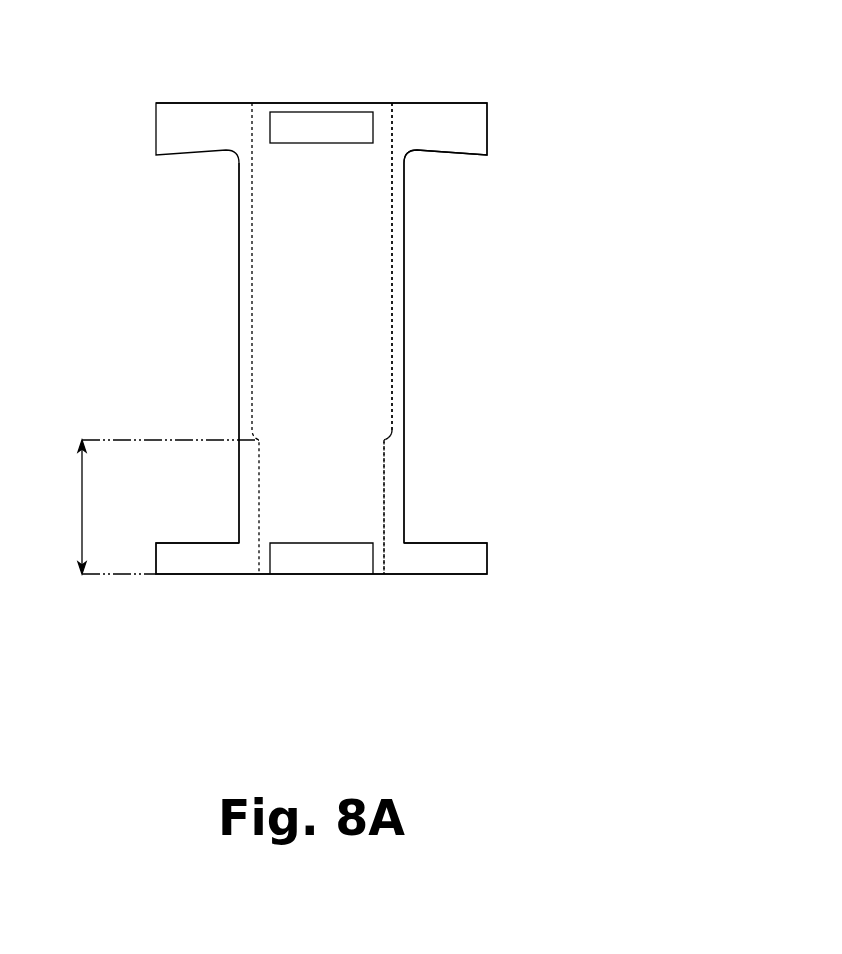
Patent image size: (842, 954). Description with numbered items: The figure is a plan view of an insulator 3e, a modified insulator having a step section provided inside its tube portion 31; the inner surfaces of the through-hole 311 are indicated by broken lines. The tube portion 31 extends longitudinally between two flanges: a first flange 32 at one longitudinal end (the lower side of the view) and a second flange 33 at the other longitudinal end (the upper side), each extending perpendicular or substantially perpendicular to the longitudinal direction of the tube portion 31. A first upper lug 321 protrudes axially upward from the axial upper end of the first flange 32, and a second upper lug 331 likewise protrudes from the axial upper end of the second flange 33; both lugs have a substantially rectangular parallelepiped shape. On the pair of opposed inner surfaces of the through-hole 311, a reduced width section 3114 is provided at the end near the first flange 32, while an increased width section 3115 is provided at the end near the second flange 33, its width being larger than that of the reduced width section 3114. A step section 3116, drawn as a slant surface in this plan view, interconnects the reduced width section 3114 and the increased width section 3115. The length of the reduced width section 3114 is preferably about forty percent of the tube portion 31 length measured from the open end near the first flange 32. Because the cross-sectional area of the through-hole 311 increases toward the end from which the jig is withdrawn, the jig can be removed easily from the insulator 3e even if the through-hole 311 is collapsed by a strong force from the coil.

The insulator 3e is at (128, 108).
The second flange 33 is at (228, 108).
The second upper lug 331 is at (330, 127).
The tube portion 31 is at (238, 215).
The through-hole 311 is at (272, 262).
The increased width section 3115 is at (392, 337).
The step section 3116 is at (392, 438).
The reduced width section 3114 is at (384, 485).
The first flange 32 is at (450, 560).
The first upper lug 321 is at (312, 562).